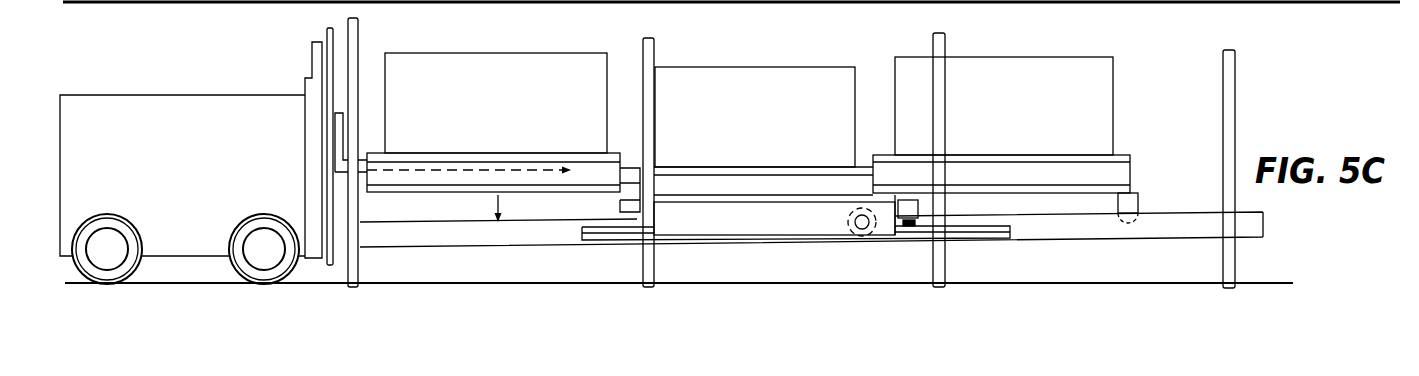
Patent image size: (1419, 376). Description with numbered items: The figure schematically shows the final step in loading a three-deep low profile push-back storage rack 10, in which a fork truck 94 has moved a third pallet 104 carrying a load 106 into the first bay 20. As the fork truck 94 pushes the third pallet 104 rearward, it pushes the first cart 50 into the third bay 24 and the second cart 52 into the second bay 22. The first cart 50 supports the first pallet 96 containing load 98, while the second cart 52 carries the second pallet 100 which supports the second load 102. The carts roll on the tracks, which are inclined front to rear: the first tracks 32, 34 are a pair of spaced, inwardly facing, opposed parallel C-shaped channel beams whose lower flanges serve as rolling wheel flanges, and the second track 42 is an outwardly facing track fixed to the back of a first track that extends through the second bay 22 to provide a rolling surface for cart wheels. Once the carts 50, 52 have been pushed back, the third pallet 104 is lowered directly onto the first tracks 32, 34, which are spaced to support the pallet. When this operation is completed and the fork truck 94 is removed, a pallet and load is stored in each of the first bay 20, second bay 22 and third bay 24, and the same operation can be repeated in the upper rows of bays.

The storage and retrieval system 10 is at (1264, 66).
The first bay 20 is at (620, 56).
The second bay 22 is at (877, 57).
The third bay 24 is at (1170, 66).
The first track 32 is at (811, 214).
The first track 34 is at (458, 218).
The second track 42 is at (1013, 232).
The first cart 50 is at (1028, 183).
The second cart 52 is at (815, 186).
The fork truck 94 is at (208, 94).
The pallet 96 is at (1048, 155).
The load 98 is at (1053, 57).
The second pallet 100 is at (695, 163).
The second load 102 is at (736, 64).
The third pallet 104 is at (491, 150).
The load 106 is at (487, 52).